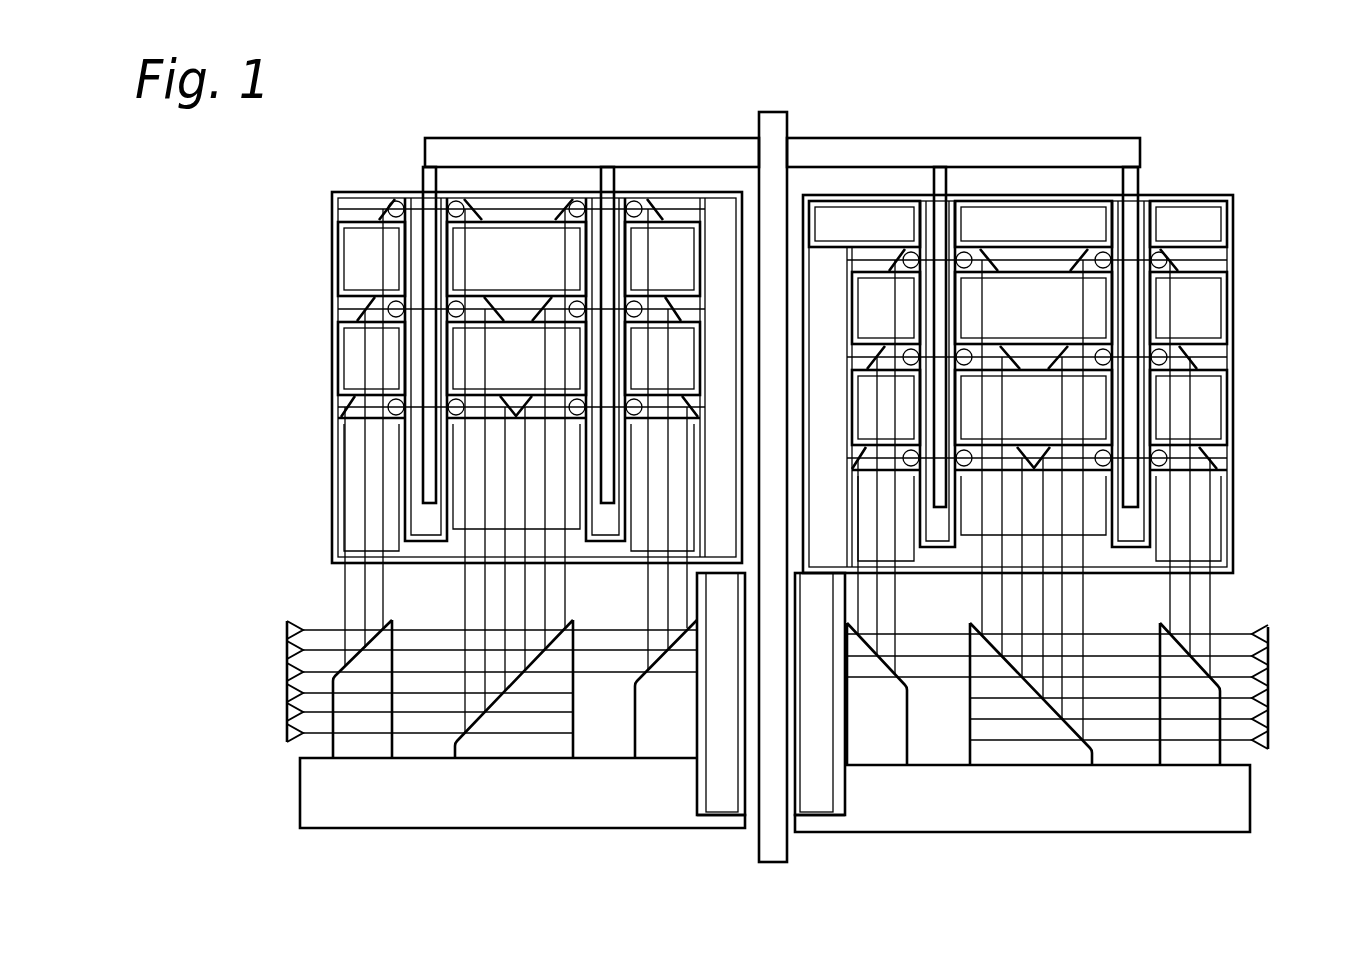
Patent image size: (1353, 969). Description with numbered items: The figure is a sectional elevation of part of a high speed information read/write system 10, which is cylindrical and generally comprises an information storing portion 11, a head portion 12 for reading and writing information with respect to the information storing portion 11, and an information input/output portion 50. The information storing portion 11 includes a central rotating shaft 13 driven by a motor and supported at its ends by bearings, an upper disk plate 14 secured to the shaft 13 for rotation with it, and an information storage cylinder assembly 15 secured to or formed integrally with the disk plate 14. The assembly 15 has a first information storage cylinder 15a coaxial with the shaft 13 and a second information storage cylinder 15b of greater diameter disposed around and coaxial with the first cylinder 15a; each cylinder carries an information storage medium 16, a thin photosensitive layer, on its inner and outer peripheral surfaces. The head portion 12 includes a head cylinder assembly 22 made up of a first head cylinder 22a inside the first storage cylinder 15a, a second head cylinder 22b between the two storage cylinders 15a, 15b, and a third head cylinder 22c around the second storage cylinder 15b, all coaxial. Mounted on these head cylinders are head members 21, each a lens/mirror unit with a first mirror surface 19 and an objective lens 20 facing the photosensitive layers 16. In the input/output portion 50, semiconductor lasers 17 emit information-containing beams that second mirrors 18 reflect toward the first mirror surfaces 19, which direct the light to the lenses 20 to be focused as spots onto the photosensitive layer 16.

The high speed information read/write system 10 is at (815, 133).
The information storing portion 11 is at (1152, 165).
The head portion 12 is at (1237, 423).
The central rotating shaft 13 is at (757, 848).
The upper disk plate 14 is at (648, 138).
The information storage cylinder assembly 15 is at (1036, 281).
The first information storage cylinder 15a is at (950, 187).
The second information storage cylinder 15b is at (1097, 300).
The information storage medium 16 is at (603, 246).
The semiconductor laser 17 is at (288, 628).
The second mirror 18 is at (1067, 733).
The first mirror surface 19 is at (1205, 362).
The objective lens 20 is at (1165, 358).
The head member 21 is at (503, 196).
The head cylinder assembly 22 is at (455, 325).
The first head cylinder 22a is at (658, 467).
The second head cylinder 22b is at (512, 503).
The third head cylinder 22c is at (368, 523).
The information input/output portion 50 is at (1290, 686).